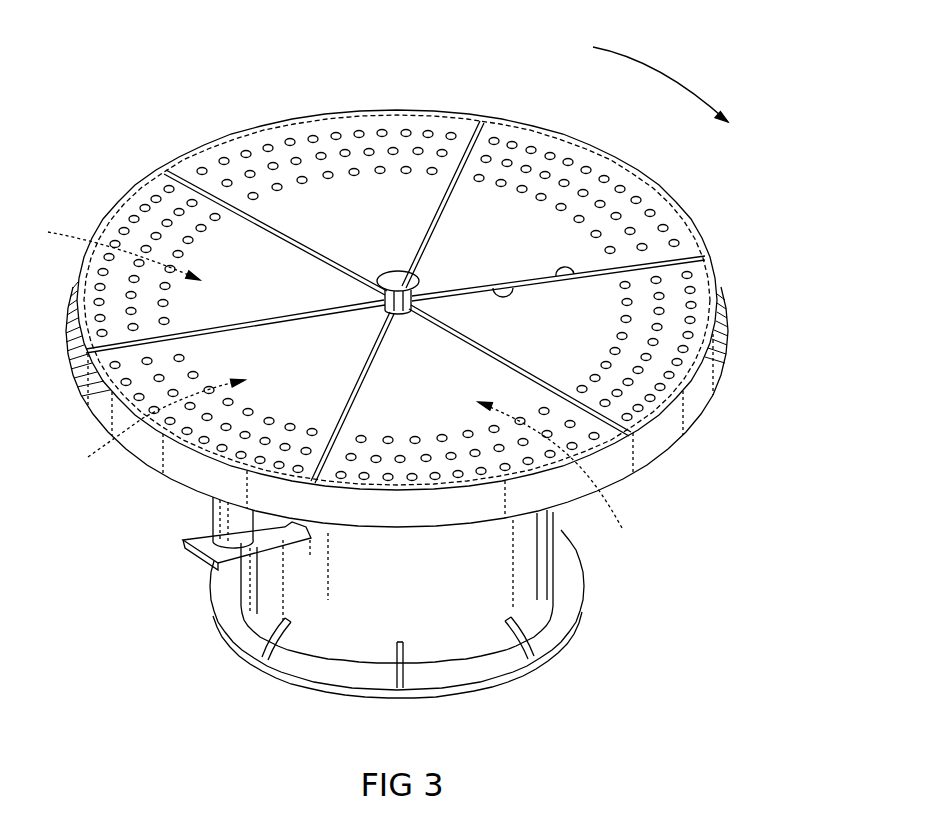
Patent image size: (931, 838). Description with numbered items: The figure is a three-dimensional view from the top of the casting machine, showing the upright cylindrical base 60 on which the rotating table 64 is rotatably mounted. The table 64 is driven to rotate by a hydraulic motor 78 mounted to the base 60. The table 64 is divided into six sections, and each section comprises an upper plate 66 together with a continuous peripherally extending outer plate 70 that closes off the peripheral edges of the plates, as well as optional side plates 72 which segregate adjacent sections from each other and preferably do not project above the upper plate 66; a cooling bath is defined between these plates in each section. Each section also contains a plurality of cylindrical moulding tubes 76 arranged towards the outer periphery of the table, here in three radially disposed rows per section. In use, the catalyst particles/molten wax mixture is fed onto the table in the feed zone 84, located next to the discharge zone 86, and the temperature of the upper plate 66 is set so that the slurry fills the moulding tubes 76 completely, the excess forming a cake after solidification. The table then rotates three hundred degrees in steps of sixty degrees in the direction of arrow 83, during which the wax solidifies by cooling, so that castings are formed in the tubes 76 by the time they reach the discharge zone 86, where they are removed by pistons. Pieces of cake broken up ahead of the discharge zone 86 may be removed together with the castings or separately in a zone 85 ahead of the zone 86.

The upright cylindrical base 60 is at (526, 589).
The rotating table 64 is at (291, 108).
The upper plate 66 is at (500, 193).
The outer plate 70 is at (700, 397).
The side plates 72 is at (516, 283).
The cylindrical moulding tubes 76 is at (562, 203).
The hydraulic motor 78 is at (205, 521).
The arrow 83 is at (658, 72).
The feed zone 84 is at (107, 248).
The zone 85 is at (562, 479).
The discharge zone 86 is at (151, 430).